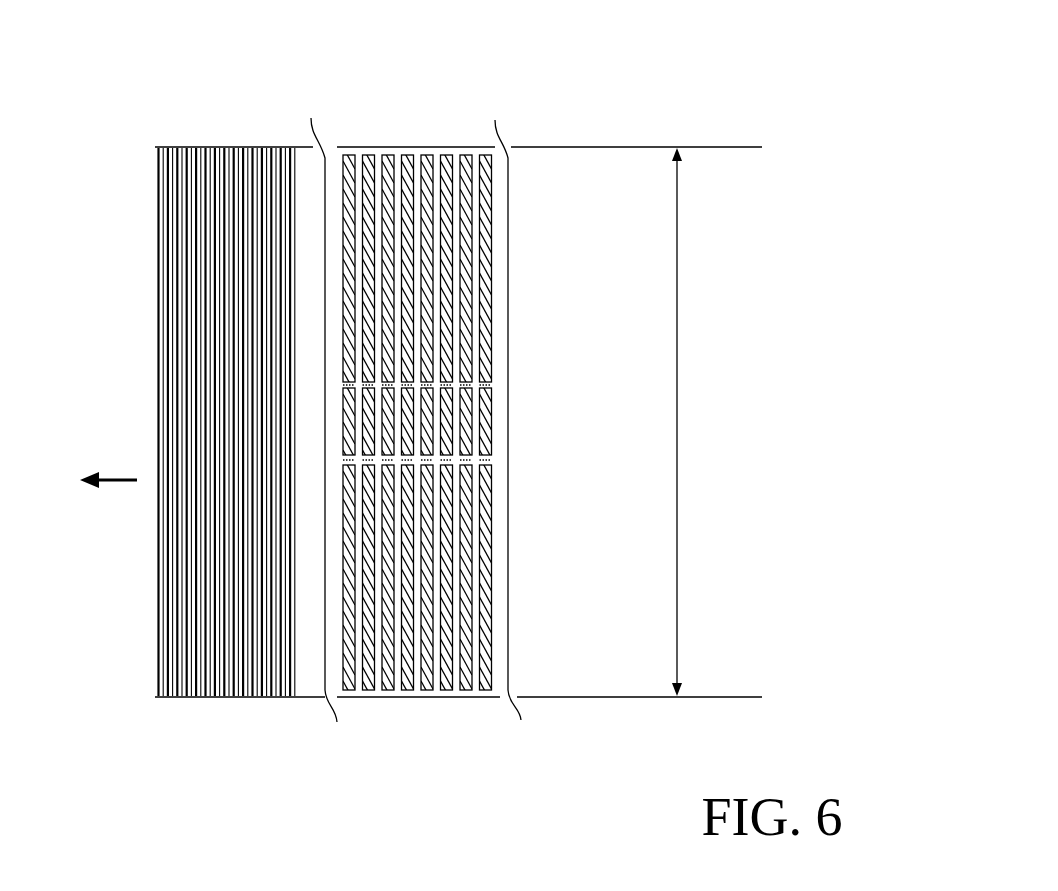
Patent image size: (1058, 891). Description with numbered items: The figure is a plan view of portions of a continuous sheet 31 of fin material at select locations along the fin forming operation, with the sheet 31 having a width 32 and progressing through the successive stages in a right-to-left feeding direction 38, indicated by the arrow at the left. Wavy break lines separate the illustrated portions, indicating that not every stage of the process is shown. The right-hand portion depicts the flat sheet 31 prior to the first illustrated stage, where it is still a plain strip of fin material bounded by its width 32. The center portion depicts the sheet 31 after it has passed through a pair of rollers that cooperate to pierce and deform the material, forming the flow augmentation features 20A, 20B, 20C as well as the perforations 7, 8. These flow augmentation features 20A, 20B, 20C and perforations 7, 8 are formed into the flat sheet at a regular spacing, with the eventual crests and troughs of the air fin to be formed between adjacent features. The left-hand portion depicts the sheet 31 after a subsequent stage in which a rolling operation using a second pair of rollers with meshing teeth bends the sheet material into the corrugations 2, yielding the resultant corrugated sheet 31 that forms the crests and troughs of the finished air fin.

The corrugations 2 is at (197, 152).
The perforation 7 is at (486, 458).
The perforation 8 is at (486, 385).
The flow augmentation feature 20A is at (448, 683).
The flow augmentation feature 20B is at (487, 415).
The flow augmentation feature 20C is at (408, 158).
The sheet 31 is at (585, 158).
The width 32 is at (678, 557).
The feeding direction 38 is at (114, 477).